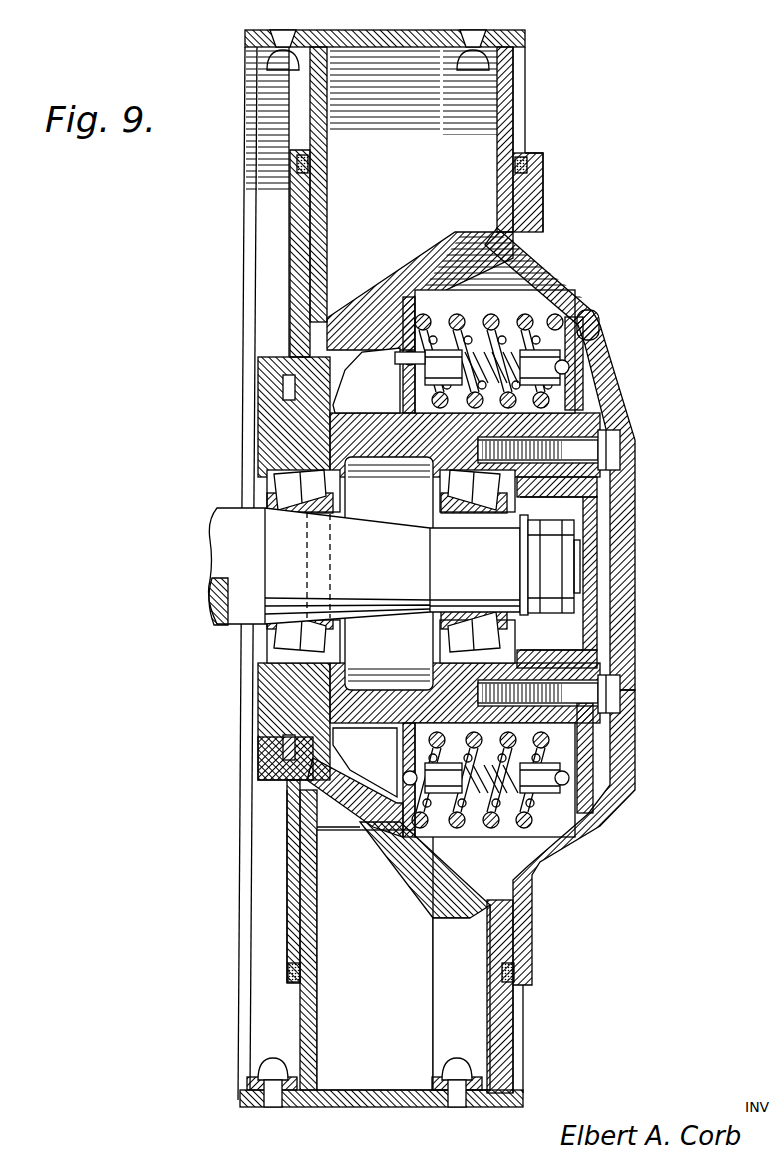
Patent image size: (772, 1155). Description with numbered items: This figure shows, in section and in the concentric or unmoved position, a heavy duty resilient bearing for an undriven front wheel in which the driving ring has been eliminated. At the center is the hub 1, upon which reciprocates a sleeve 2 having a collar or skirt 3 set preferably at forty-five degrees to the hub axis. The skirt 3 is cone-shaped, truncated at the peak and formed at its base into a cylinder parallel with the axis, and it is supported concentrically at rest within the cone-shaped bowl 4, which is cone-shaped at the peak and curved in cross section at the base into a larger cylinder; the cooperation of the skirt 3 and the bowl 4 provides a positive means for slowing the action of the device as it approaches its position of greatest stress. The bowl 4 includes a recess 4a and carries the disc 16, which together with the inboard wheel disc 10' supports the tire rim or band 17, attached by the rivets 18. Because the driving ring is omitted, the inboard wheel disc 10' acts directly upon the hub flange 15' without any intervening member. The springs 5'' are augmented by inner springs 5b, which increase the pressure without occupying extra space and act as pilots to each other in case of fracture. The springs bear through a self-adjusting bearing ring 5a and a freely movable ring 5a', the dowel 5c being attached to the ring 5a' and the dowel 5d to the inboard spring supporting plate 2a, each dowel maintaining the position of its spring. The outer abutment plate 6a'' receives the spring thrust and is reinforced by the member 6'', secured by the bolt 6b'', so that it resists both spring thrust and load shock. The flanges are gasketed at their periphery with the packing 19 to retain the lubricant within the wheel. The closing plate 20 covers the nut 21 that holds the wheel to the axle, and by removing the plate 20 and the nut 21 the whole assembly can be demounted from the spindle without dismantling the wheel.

The hub 1 is at (368, 686).
The sleeve 2 is at (548, 706).
The inboard spring supporting plate 2a is at (398, 742).
The skirt 3 is at (388, 793).
The cone-shaped bowl 4 is at (398, 866).
The housing recess 4a is at (461, 997).
The springs 5'' is at (521, 621).
The self-adjusting bearing ring 5a is at (542, 351).
The freely movable ring 5a' is at (549, 770).
The inner springs 5b is at (590, 316).
The dowel 5c is at (544, 571).
The dowel 5d is at (428, 571).
The reinforcing member 6'' is at (588, 695).
The outer abutment plate 6a'' is at (572, 606).
The bolt 6b'' is at (591, 454).
The inboard wheel disc 10' is at (394, 560).
The hub flange 15' is at (240, 573).
The disc 16 is at (490, 962).
The tire rim or band 17 is at (356, 1107).
The rivets 18 is at (270, 1062).
The packing 19 is at (287, 975).
The closing plate 20 is at (597, 602).
The nut 21 is at (553, 613).